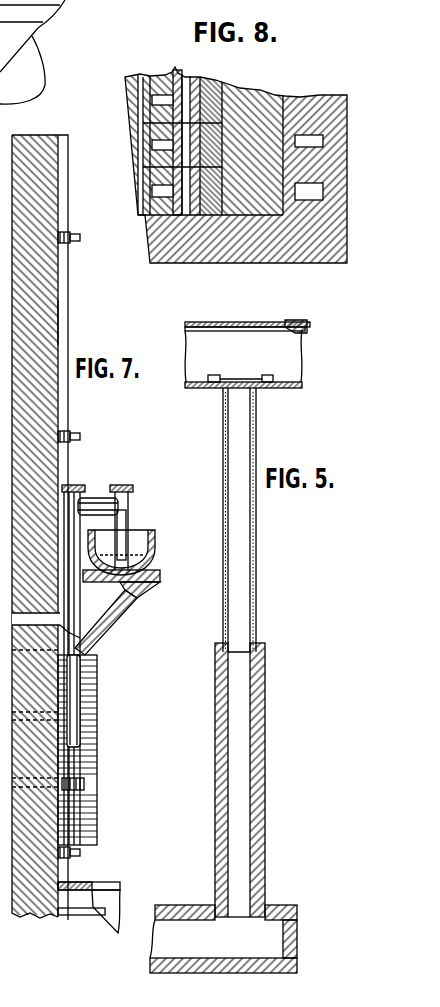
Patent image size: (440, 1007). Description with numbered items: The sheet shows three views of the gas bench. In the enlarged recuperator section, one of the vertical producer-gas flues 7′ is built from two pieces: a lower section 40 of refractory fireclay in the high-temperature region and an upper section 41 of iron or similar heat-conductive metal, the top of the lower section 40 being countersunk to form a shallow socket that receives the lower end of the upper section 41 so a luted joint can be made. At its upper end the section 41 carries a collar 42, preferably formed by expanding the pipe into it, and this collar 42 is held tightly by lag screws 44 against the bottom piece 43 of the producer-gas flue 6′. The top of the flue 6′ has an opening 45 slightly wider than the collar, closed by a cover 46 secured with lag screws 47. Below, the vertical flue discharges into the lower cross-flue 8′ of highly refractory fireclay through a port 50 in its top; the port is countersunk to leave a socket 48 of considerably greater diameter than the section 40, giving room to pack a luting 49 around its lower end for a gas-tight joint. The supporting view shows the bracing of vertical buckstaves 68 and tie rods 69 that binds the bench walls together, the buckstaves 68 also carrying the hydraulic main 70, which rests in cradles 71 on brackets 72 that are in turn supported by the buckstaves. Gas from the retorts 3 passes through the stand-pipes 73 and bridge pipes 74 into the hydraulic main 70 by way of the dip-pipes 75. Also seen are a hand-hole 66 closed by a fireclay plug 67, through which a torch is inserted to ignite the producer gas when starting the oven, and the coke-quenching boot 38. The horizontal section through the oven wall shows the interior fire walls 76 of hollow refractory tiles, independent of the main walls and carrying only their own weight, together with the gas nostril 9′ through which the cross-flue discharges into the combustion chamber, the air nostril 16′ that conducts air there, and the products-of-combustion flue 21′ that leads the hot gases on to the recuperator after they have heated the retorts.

In FIG. 8, the interior fire wall 76 is at (143, 80).
In FIG. 8, the air nostril 16′ is at (160, 146).
In FIG. 8, the gas nostril 9′ is at (160, 191).
In FIG. 8, the products-of-combustion flue 21′ is at (306, 193).
In FIG. 7, the vertical buckstave 68 is at (62, 322).
In FIG. 7, the tie rod 69 is at (88, 229).
In FIG. 7, the hand-hole 66 is at (45, 620).
In FIG. 7, the fireclay plug 67 is at (66, 628).
In FIG. 7, the hydraulic main 70 is at (135, 548).
In FIG. 7, the cradle 71 is at (153, 567).
In FIG. 7, the bracket 72 is at (126, 608).
In FIG. 7, the stand-pipe 73 is at (78, 599).
In FIG. 7, the bridge pipe 74 is at (96, 500).
In FIG. 7, the dip-pipe 75 is at (122, 514).
In FIG. 7, the retort 3 is at (85, 678).
In FIG. 7, the coke-quenching boot 38 is at (121, 893).
In FIG. 5, the lower flue section 40 is at (265, 779).
In FIG. 5, the upper flue section 41 is at (256, 560).
In FIG. 5, the collar 42 is at (210, 380).
In FIG. 5, the bottom piece 43 is at (185, 386).
In FIG. 5, the lag screw 44 is at (262, 377).
In FIG. 5, the opening 45 is at (230, 330).
In FIG. 5, the cover 46 is at (237, 319).
In FIG. 5, the lag screw 47 is at (297, 321).
In FIG. 5, the socket 48 is at (266, 908).
In FIG. 5, the luting 49 is at (213, 908).
In FIG. 5, the port 50 is at (240, 917).
In FIG. 5, the producer-gas flue 6′ is at (243, 356).
In FIG. 5, the vertical producer gas flue 7′ is at (242, 632).
In FIG. 5, the lower cross-flue 8′ is at (223, 939).